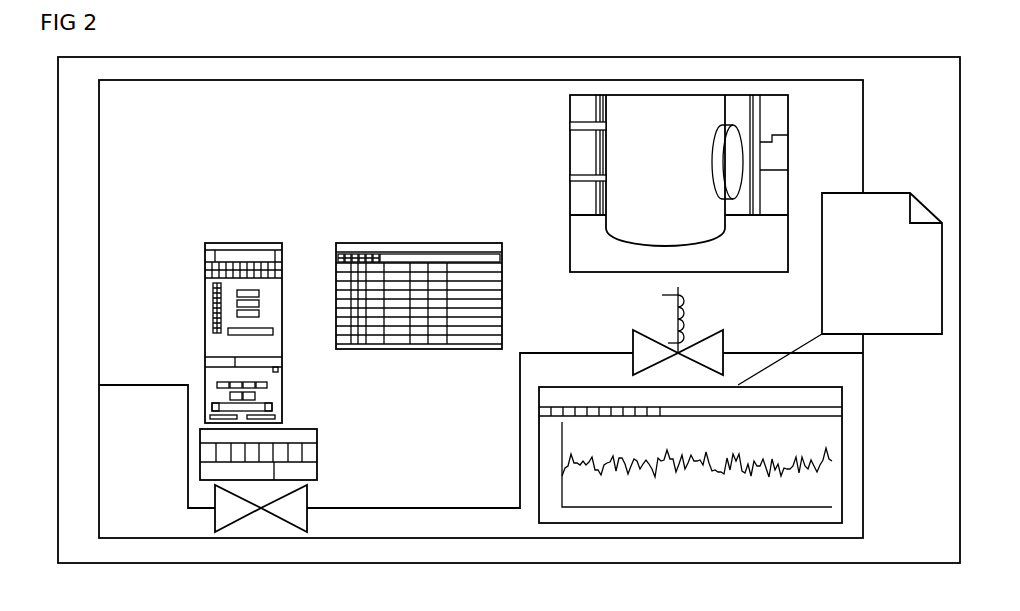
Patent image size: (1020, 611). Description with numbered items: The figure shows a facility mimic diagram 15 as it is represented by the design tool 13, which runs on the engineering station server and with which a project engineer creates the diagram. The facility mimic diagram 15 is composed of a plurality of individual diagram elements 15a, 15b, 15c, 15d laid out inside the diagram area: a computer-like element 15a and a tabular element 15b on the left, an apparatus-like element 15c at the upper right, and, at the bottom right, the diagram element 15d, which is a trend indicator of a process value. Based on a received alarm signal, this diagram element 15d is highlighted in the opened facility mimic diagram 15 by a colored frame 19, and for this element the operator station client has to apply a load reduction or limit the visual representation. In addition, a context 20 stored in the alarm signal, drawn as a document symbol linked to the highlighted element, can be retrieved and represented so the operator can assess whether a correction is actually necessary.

The design tool 13 is at (83, 86).
The facility mimic diagram 15 is at (127, 110).
The diagram element 15a is at (243, 243).
The diagram element 15b is at (419, 243).
The diagram element 15c is at (570, 186).
The diagram element 15d is at (842, 432).
The colored frame 19 is at (842, 487).
The context 20 is at (891, 280).